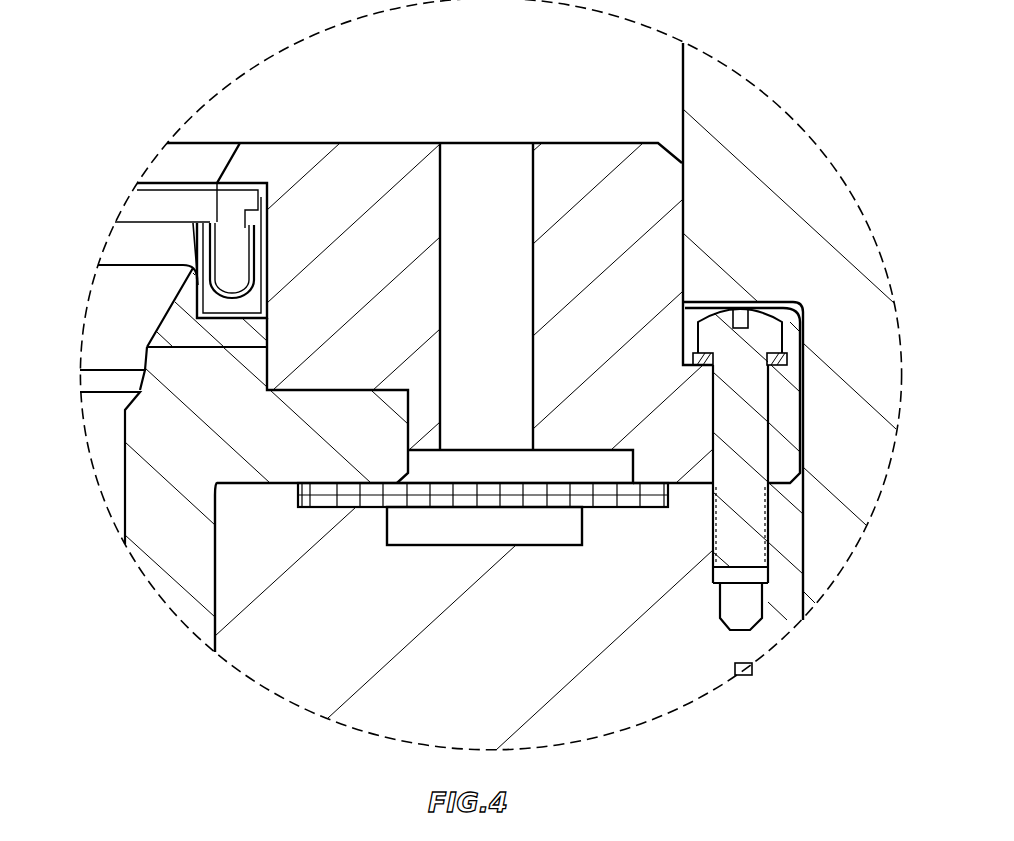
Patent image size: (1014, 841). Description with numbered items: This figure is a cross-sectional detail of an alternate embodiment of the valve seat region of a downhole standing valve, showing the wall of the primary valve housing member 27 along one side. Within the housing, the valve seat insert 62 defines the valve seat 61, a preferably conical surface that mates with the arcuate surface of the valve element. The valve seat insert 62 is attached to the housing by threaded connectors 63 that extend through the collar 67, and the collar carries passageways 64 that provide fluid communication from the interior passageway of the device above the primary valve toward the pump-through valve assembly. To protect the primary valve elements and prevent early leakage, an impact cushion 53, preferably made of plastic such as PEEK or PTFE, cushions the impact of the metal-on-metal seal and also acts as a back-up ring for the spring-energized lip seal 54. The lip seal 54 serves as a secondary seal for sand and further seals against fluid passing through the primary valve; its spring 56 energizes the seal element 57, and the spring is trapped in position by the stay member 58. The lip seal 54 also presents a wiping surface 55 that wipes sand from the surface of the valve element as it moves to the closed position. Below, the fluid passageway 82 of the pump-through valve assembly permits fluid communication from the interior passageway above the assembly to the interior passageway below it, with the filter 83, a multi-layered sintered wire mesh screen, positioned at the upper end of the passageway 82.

The primary valve housing member 27 is at (760, 113).
The impact cushion 53 is at (177, 330).
The spring-energized lip seal 54 is at (203, 253).
The wiping surface 55 is at (188, 232).
The spring 56 is at (225, 268).
The seal element 57 is at (258, 232).
The stay member 58 is at (233, 212).
The valve seat 61 is at (140, 360).
The valve seat insert 62 is at (163, 527).
The threaded connectors 63 is at (740, 436).
The passageways 64 is at (492, 167).
The collar 67 is at (648, 256).
The fluid passageway 82 is at (560, 532).
The filter 83 is at (628, 508).